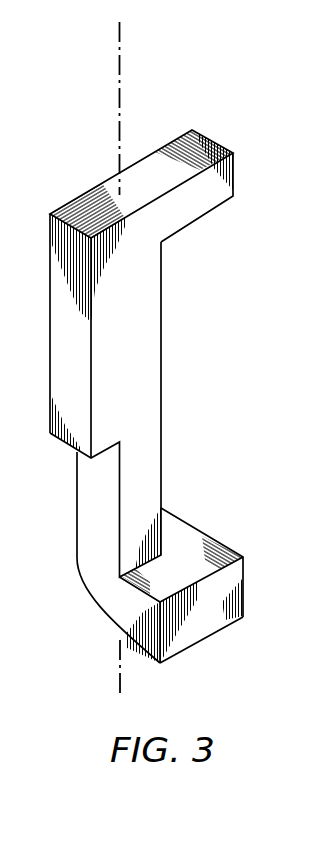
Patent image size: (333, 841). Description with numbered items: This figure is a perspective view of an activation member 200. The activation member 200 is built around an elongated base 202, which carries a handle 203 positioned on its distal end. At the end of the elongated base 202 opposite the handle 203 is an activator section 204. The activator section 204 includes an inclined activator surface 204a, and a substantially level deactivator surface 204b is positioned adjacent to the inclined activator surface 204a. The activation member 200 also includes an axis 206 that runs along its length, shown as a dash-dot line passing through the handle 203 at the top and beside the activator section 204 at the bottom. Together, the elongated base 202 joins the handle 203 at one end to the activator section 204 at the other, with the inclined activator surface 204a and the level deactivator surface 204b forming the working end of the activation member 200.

The activation member 200 is at (183, 392).
The elongated base 202 is at (158, 352).
The handle 203 is at (153, 168).
The activator section 204 is at (141, 585).
The inclined activator surface 204a is at (110, 622).
The deactivator surface 204b is at (202, 640).
The axis 206 is at (118, 75).